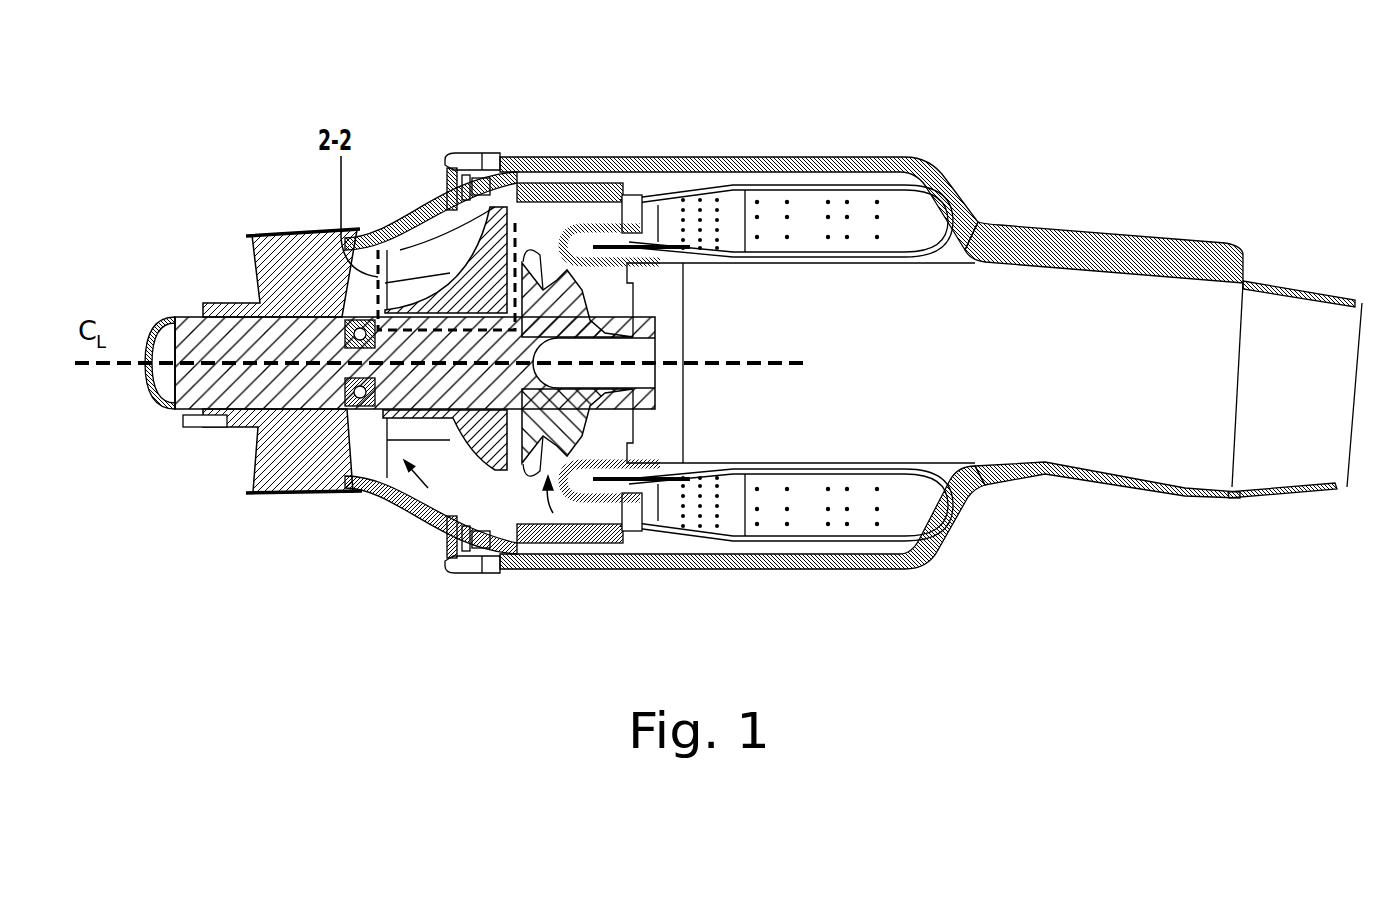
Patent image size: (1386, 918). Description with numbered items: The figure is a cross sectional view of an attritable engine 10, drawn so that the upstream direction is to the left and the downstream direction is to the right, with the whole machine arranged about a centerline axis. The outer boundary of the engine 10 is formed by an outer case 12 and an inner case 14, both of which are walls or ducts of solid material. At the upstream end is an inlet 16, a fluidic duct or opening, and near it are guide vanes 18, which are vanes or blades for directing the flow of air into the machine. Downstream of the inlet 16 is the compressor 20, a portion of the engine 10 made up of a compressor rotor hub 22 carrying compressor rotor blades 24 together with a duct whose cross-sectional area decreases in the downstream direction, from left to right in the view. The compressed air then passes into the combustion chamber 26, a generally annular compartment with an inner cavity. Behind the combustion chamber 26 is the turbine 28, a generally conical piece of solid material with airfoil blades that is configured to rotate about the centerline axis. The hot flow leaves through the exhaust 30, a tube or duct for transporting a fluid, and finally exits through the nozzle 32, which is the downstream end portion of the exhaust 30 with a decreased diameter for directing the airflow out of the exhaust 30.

The engine 10 is at (1022, 141).
The outer case 12 is at (435, 168).
The inner case 14 is at (562, 170).
The inlet 16 is at (257, 466).
The guide vanes 18 is at (300, 253).
The compressor 20 is at (390, 470).
The compressor rotor hub 22 is at (453, 423).
The compressor rotor blades 24 is at (430, 273).
The combustion chamber 26 is at (805, 187).
The turbine 28 is at (553, 513).
The exhaust 30 is at (1135, 273).
The nozzle 32 is at (1338, 303).